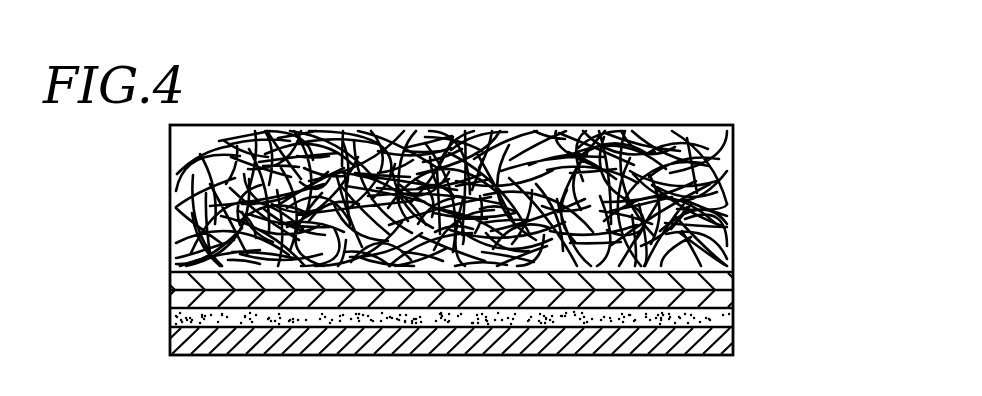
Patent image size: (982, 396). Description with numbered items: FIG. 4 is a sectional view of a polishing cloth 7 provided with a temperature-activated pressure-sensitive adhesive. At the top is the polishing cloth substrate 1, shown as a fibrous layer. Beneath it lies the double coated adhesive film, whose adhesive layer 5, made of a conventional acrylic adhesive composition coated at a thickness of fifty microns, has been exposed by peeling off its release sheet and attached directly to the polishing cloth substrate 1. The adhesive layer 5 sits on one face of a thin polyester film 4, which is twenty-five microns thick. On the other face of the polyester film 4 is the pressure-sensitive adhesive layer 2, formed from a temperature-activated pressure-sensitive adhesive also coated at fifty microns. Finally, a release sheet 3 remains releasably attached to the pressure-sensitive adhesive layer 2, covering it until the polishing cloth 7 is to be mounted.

The polishing cloth 7 is at (836, 152).
The polishing cloth substrate 1 is at (733, 165).
The adhesive layer 5 is at (733, 282).
The polyester film 4 is at (733, 300).
The pressure-sensitive adhesive layer 2 is at (733, 318).
The release sheet 3 is at (733, 343).